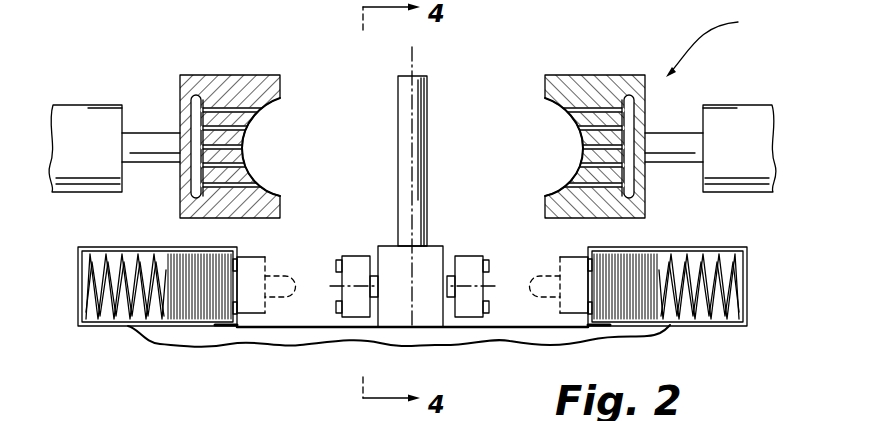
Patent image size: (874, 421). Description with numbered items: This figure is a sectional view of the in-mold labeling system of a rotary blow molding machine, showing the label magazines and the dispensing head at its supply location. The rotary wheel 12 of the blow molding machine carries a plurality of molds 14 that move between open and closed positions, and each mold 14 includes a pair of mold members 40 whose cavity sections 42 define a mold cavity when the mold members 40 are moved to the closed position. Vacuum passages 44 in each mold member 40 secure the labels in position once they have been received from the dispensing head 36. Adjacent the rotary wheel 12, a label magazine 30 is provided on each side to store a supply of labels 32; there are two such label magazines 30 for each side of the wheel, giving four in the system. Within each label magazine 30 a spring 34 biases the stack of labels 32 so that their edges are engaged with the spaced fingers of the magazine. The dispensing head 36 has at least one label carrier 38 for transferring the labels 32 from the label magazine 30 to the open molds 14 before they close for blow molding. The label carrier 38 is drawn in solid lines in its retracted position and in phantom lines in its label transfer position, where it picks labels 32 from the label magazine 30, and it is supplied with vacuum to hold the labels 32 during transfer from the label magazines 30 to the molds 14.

The rotary wheel 12 is at (97, 104).
The molds 14 is at (716, 44).
The label magazine 30 is at (141, 249).
The labels 32 is at (186, 263).
The spring 34 is at (83, 327).
The dispensing head 36 is at (445, 247).
The label carrier 38 is at (266, 260).
The mold members 40 is at (198, 75).
The cavity sections 42 is at (262, 110).
The vacuum passages 44 is at (228, 127).